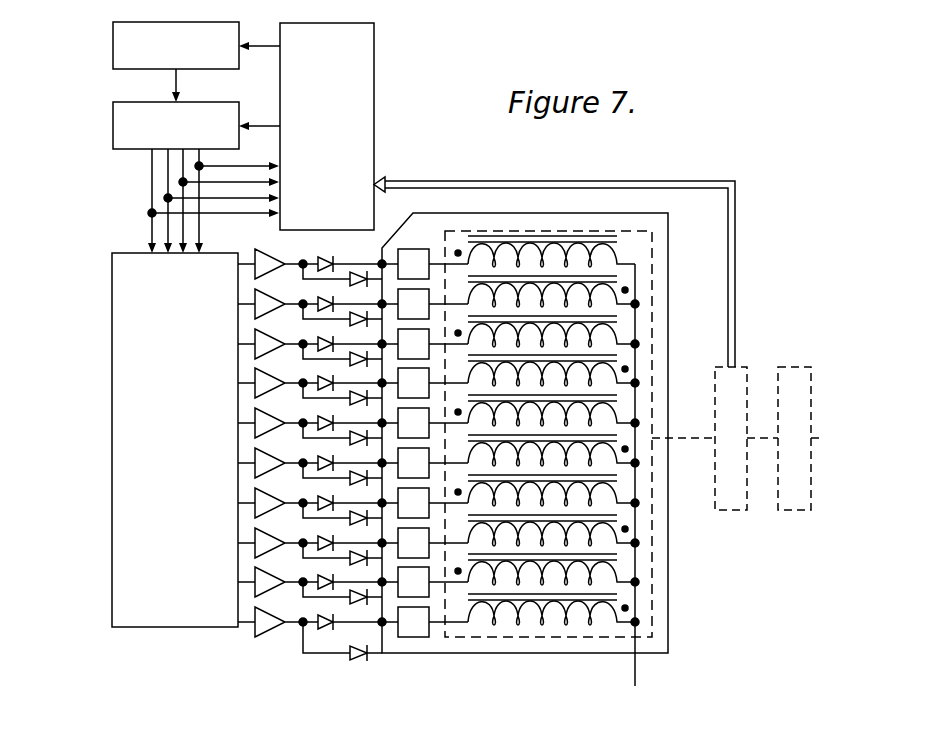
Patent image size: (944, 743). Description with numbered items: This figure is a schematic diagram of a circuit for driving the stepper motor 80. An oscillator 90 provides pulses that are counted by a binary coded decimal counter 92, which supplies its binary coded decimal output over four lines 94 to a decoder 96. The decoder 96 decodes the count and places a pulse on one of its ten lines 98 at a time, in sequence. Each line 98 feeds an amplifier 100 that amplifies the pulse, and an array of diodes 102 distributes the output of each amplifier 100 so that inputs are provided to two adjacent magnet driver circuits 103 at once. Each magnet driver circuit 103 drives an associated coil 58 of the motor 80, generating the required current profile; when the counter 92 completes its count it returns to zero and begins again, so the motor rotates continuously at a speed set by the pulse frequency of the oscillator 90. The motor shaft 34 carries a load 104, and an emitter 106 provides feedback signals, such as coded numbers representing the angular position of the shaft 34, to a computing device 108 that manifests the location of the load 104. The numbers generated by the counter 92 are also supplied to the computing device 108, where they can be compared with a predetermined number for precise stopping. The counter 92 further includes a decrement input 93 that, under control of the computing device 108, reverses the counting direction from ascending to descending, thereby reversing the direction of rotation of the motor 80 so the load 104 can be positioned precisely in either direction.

The oscillator 90 is at (112, 43).
The binary coded decimal counter 92 is at (112, 120).
The decrement input 93 is at (270, 125).
The four lines 94 is at (150, 183).
The decoder 96 is at (112, 363).
The ten lines 98 is at (249, 628).
The amplifier 100 is at (262, 633).
The diodes 102 is at (325, 626).
The magnet driver circuit 103 is at (429, 638).
The coil 58 is at (543, 624).
The stepper motor 80 is at (652, 552).
The load 104 is at (792, 365).
The emitter 106 is at (732, 510).
The computing device 108 is at (374, 107).
The motor shaft 34 is at (823, 438).